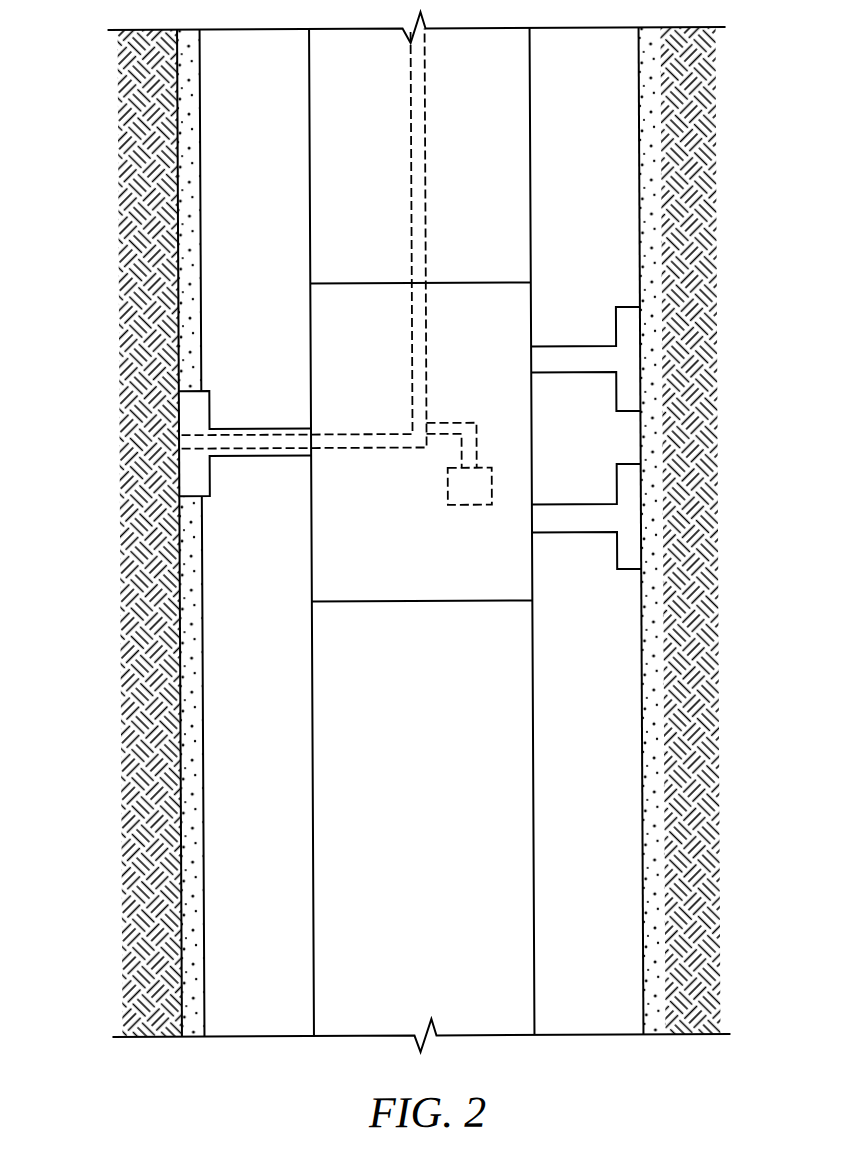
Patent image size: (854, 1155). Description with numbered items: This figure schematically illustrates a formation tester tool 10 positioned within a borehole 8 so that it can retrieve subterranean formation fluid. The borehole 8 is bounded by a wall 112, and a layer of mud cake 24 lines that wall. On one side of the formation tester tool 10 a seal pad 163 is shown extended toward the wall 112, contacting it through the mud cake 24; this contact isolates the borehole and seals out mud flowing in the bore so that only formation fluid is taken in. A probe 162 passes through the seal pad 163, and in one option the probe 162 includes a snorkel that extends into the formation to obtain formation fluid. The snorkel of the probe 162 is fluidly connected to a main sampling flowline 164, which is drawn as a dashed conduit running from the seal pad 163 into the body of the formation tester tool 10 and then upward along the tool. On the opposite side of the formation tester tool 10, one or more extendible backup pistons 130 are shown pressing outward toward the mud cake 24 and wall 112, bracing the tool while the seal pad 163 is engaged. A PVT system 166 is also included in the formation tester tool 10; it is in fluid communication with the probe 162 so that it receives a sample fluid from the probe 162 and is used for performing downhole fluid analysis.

The borehole 8 is at (178, 320).
The formation tester tool 10 is at (541, 112).
The mud cake 24 is at (205, 935).
The wall 112 is at (177, 603).
The extendible backup pistons 130 is at (632, 360).
The probe 162 is at (261, 426).
The seal pad 163 is at (193, 408).
The main sampling flowline 164 is at (357, 450).
The PVT system 166 is at (472, 505).